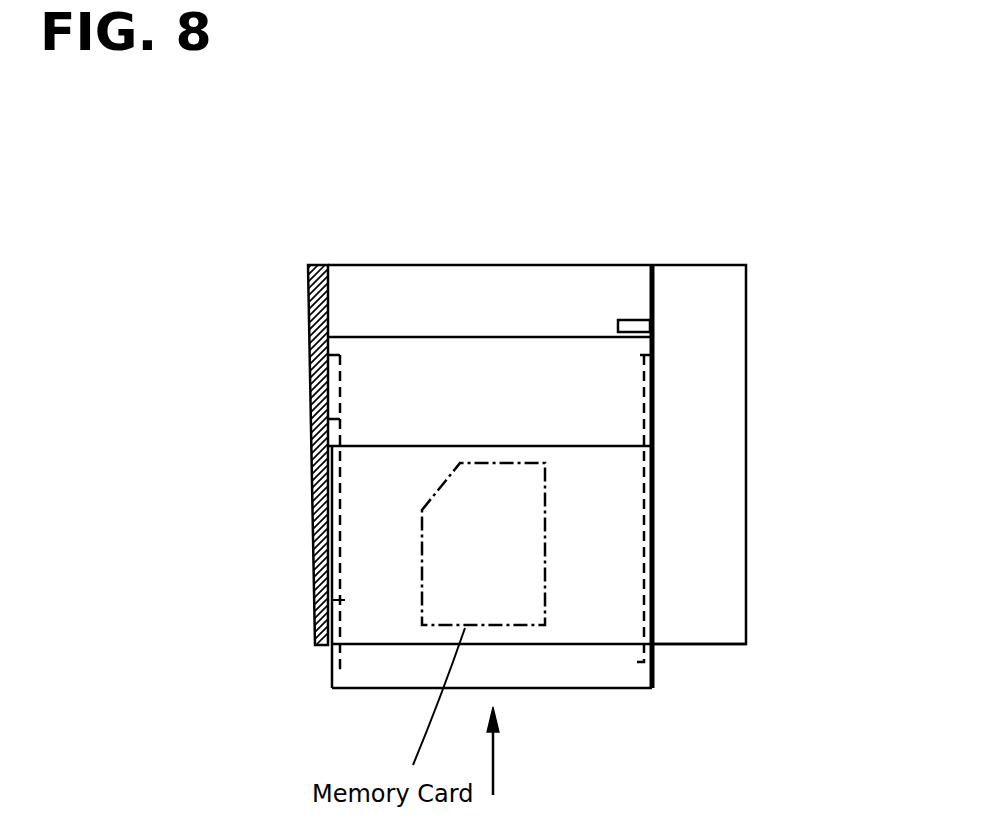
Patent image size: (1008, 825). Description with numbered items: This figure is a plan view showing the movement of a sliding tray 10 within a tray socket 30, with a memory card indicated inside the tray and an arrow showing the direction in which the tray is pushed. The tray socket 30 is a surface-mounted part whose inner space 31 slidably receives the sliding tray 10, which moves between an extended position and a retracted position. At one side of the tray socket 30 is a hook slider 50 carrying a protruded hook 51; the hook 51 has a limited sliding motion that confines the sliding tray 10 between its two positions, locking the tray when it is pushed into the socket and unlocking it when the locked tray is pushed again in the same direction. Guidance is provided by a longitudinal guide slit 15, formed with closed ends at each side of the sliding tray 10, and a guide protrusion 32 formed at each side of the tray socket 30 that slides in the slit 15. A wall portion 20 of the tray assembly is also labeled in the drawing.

The sliding tray 10 is at (332, 682).
The guide slit 15 is at (313, 430).
The partition wall 20 is at (367, 506).
The tray socket 30 is at (308, 345).
The inner space 31 is at (481, 324).
The guide protrusion 32 is at (338, 568).
The hook slider 50 is at (746, 440).
The protruded hook 51 is at (628, 318).